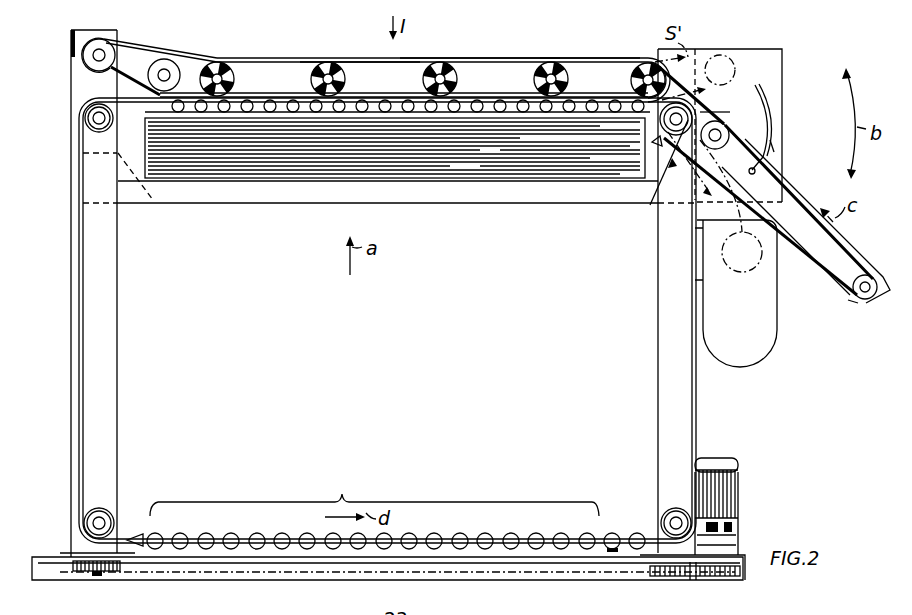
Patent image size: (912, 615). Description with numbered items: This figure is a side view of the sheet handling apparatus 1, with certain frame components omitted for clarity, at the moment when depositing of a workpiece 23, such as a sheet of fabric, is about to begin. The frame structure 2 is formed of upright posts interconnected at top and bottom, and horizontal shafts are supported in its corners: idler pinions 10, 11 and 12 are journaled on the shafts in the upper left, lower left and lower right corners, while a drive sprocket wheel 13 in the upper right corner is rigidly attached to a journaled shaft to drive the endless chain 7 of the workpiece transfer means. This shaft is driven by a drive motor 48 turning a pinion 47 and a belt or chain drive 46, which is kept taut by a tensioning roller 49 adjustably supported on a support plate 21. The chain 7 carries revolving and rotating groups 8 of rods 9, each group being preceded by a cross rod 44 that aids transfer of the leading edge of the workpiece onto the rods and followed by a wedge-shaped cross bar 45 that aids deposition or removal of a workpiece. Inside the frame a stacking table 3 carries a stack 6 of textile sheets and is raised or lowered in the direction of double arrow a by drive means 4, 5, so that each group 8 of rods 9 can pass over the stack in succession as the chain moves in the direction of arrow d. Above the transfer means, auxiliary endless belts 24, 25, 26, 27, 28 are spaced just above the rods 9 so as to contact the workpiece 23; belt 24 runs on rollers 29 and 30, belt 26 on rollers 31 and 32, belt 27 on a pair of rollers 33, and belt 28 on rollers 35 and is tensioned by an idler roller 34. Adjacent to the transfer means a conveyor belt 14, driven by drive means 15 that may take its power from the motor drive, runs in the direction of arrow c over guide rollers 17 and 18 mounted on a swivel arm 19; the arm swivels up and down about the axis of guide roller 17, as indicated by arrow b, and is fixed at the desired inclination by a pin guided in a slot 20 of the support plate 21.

The apparatus 1 is at (66, 288).
The frame structure 2 is at (684, 400).
The stacking table 3 is at (218, 183).
The drive means 4 is at (738, 500).
The drive means 5 is at (72, 565).
The stack 6 is at (290, 165).
The endless chain 7 is at (426, 103).
The group of rods 8 is at (374, 489).
The rods 9 is at (532, 108).
The idler pinion 10 is at (88, 118).
The idler pinion 11 is at (92, 515).
The idler pinion 12 is at (668, 525).
The drive sprocket wheel 13 is at (687, 110).
The conveyor belt 14 is at (846, 248).
The drive means 15 is at (719, 113).
The guide roller 17 is at (720, 134).
The guide roller 18 is at (846, 302).
The swivel arm 19 is at (872, 314).
The slot 20 is at (763, 100).
The support plate 21 is at (774, 146).
The workpiece 23 is at (476, 98).
The endless belt 24 is at (568, 58).
The endless belt 25 is at (474, 58).
The endless belt 26 is at (408, 58).
The endless belt 27 is at (247, 58).
The endless belt 28 is at (127, 45).
The roller 29 is at (643, 64).
The roller 30 is at (568, 80).
The roller 31 is at (457, 81).
The roller 32 is at (345, 79).
The roller 33 is at (234, 78).
The idler roller 34 is at (168, 71).
The roller 35 is at (92, 51).
The cross rod 44 is at (98, 99).
The cross bar 45 is at (136, 537).
The belt or chain drive 46 is at (690, 42).
The pinion 47 is at (747, 262).
The drive motor 48 is at (765, 350).
The tensioning roller 49 is at (733, 58).